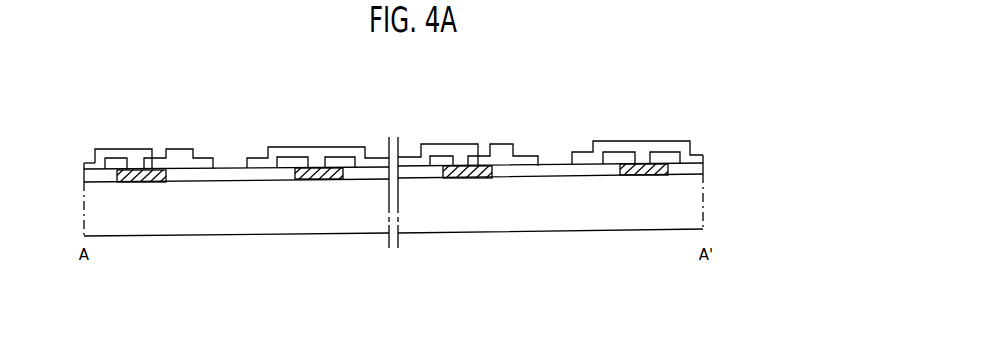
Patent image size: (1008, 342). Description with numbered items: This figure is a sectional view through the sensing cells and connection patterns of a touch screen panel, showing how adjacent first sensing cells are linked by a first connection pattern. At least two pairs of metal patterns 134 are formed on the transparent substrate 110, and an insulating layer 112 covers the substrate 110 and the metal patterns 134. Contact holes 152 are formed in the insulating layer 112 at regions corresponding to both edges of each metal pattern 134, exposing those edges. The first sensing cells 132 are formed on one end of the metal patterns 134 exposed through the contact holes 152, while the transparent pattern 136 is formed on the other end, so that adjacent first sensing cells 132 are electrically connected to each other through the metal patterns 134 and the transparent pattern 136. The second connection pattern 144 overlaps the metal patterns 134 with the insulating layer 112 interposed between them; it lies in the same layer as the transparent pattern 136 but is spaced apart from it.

The transparent substrate 110 is at (705, 210).
The insulating layer 112 is at (705, 168).
The first sensing cell 132 is at (113, 149).
The metal pattern 134 is at (133, 182).
The transparent pattern 136 is at (320, 147).
The second connection pattern 144 is at (184, 149).
The contact hole 152 is at (84, 164).